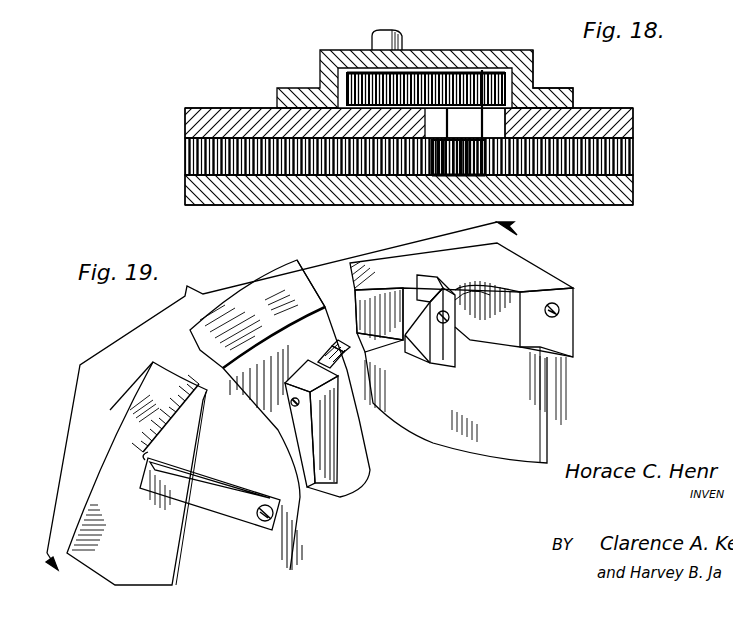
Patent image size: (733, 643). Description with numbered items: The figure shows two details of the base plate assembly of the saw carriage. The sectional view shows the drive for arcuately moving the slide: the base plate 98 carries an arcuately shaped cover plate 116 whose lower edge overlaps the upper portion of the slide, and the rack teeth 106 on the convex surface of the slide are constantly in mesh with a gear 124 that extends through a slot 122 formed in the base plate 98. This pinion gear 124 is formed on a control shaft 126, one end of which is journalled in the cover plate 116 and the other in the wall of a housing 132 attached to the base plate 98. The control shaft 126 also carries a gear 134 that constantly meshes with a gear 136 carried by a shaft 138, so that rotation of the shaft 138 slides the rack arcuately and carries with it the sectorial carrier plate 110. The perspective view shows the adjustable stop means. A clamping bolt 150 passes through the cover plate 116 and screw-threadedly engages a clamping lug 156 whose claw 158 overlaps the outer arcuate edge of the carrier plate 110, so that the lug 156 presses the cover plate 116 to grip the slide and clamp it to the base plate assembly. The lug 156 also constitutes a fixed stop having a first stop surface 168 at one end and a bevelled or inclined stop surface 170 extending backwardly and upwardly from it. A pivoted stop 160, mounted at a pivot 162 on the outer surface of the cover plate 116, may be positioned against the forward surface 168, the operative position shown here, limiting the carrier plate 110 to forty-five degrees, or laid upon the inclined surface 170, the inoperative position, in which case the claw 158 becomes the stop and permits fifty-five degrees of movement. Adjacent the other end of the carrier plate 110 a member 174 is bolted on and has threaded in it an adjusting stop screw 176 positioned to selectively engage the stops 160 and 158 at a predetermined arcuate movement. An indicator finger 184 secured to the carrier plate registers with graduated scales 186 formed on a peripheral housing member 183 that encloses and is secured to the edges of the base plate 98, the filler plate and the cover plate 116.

In FIG. 18, the base plate 98 is at (234, 124).
In FIG. 18, the rack teeth 106 is at (207, 156).
In FIG. 18, the cover plate 116 is at (310, 190).
In FIG. 19, the cover plate 116 is at (378, 318).
In FIG. 18, the gear 136 is at (345, 84).
In FIG. 18, the housing 132 is at (500, 62).
In FIG. 18, the gear 134 is at (448, 86).
In FIG. 18, the shaft 138 is at (372, 41).
In FIG. 18, the control shaft 126 is at (464, 123).
In FIG. 18, the slot 122 is at (506, 123).
In FIG. 18, the gear 124 is at (480, 166).
In FIG. 19, the peripheral housing member 183 is at (248, 300).
In FIG. 19, the member 174 is at (327, 488).
In FIG. 19, the adjusting stop screw 176 is at (328, 352).
In FIG. 19, the graduated scales 186 is at (163, 420).
In FIG. 19, the indicator finger 184 is at (228, 506).
In FIG. 19, the carrier plate 110 is at (506, 446).
In FIG. 19, the clamping lug 156 is at (542, 300).
In FIG. 19, the bolt 150 is at (563, 310).
In FIG. 19, the claw 158 is at (561, 358).
In FIG. 19, the inclined stop surface 170 is at (478, 300).
In FIG. 19, the first stop surface 168 is at (466, 346).
In FIG. 19, the pivoted stop 160 is at (444, 368).
In FIG. 19, the pivot 162 is at (427, 338).